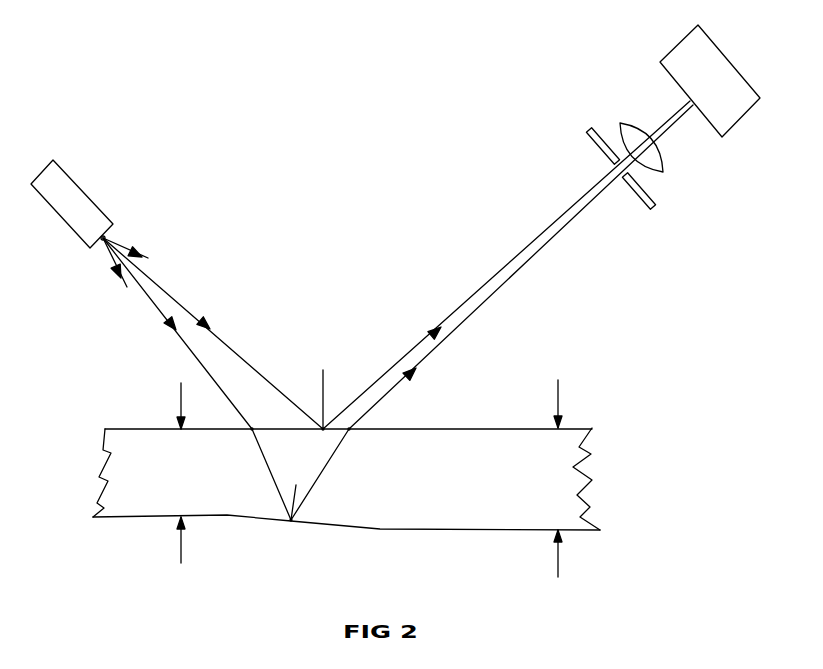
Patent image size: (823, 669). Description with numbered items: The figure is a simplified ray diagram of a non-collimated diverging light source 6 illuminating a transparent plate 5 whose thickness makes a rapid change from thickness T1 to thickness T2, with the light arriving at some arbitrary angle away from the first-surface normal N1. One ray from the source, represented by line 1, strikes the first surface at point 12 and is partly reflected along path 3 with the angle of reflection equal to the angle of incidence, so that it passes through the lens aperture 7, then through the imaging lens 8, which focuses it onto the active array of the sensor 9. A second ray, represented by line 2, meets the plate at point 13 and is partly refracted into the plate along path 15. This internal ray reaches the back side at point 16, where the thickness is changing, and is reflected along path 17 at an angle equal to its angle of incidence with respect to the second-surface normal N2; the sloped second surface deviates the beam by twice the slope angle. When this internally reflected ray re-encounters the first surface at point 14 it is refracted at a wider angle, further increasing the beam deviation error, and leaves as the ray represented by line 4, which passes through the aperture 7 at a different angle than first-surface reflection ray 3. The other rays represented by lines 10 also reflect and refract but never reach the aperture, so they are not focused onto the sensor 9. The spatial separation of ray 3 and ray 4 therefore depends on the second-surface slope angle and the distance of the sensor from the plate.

The line representing light rays from the source 1 is at (195, 312).
The line representing a second ray of incident light 2 is at (182, 342).
The first surface reflection ray 3 is at (478, 290).
The ray refracted back out of the plate 4 is at (507, 282).
The transparent plate 5 is at (346, 479).
The light source 6 is at (87, 190).
The lens aperture 7 is at (655, 207).
The imaging lens 8 is at (663, 172).
The sensor 9 is at (745, 120).
The lines representing other rays 10 is at (120, 244).
The point on the first surface 12 is at (320, 439).
The point on the first surface 13 is at (243, 439).
The point on the first surface 14 is at (360, 439).
The refracted internal ray path 15 is at (270, 477).
The point on the second surface 16 is at (290, 533).
The internally reflected ray path 17 is at (323, 477).
The normal to the first surface N1 is at (321, 386).
The normal of the second surface N2 is at (297, 490).
The plate thickness T1 is at (176, 473).
The plate thickness T2 is at (552, 478).